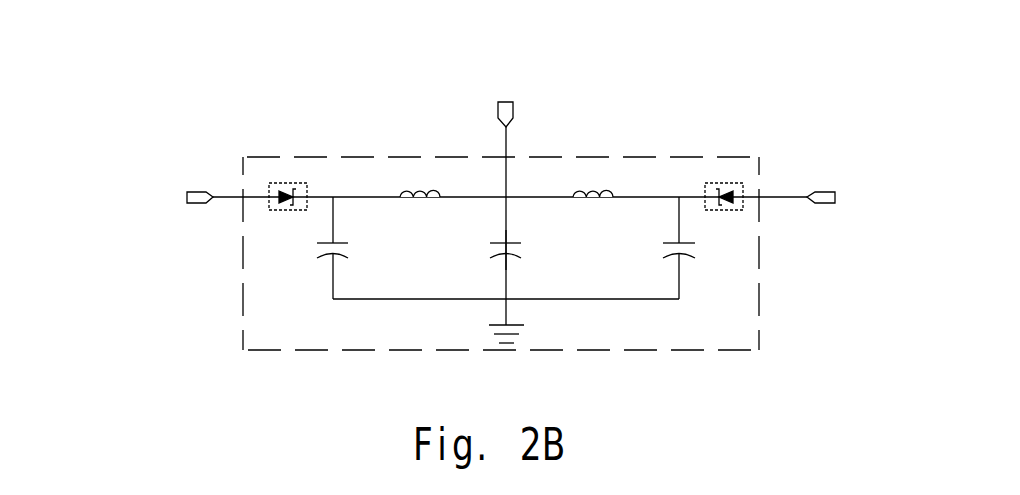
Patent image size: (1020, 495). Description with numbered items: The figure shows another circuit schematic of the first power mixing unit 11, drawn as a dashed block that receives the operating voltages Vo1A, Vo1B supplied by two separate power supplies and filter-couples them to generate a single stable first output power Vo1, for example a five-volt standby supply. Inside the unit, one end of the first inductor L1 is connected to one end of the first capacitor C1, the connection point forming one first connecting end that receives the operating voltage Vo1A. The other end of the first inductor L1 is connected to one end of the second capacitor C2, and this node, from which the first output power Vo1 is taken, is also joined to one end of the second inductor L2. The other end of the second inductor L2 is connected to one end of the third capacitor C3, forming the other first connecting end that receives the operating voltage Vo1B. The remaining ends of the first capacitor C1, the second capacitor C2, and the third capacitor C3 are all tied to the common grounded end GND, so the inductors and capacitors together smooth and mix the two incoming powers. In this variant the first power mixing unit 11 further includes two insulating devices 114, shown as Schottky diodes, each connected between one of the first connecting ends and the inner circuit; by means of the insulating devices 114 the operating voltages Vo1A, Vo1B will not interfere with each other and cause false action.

The first power mixing unit 11 is at (358, 157).
The insulating device 114 is at (286, 180).
The first capacitor C1 is at (321, 248).
The second capacitor C2 is at (492, 250).
The third capacitor C3 is at (665, 248).
The first inductor L1 is at (420, 181).
The second inductor L2 is at (593, 183).
The first output power Vo1 is at (519, 208).
The operating voltage Vo1A is at (187, 184).
The operating voltage Vo1B is at (822, 186).
The grounded end GND is at (505, 324).